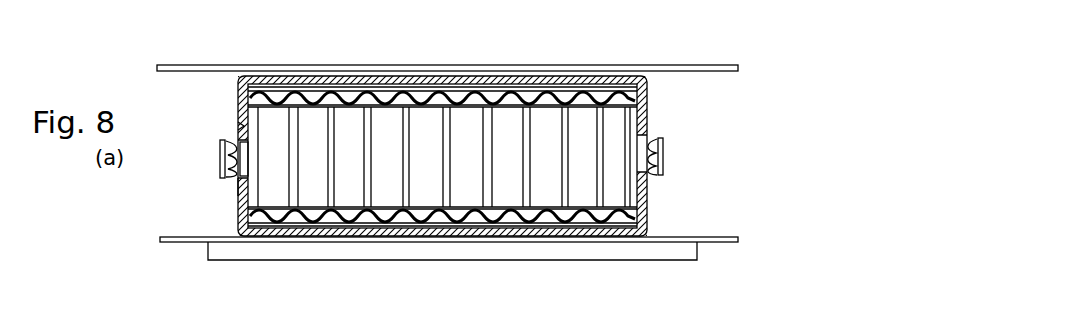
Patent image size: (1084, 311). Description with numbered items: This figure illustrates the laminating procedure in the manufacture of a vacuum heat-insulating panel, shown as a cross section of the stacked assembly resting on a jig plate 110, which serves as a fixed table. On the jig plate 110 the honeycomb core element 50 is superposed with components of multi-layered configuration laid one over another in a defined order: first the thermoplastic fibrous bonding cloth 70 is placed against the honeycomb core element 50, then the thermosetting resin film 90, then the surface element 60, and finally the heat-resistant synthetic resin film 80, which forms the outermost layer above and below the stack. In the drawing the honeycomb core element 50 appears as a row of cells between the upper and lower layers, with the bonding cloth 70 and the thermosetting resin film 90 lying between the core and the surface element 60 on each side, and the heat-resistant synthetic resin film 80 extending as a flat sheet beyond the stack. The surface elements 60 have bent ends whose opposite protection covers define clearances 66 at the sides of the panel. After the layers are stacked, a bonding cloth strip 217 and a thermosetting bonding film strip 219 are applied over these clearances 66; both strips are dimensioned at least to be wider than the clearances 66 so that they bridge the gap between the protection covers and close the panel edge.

The honeycomb core element 50 is at (613, 163).
The surface element 60 is at (582, 76).
The clearance 66 is at (240, 127).
The thermoplastic fibrous bonding cloth 70 is at (644, 106).
The heat-resistant synthetic resin film 80 is at (733, 64).
The thermosetting resin film 90 is at (642, 90).
The jig plate 110 is at (327, 245).
The bonding cloth strip 217 is at (235, 192).
The thermosetting bonding film strip 219 is at (220, 163).